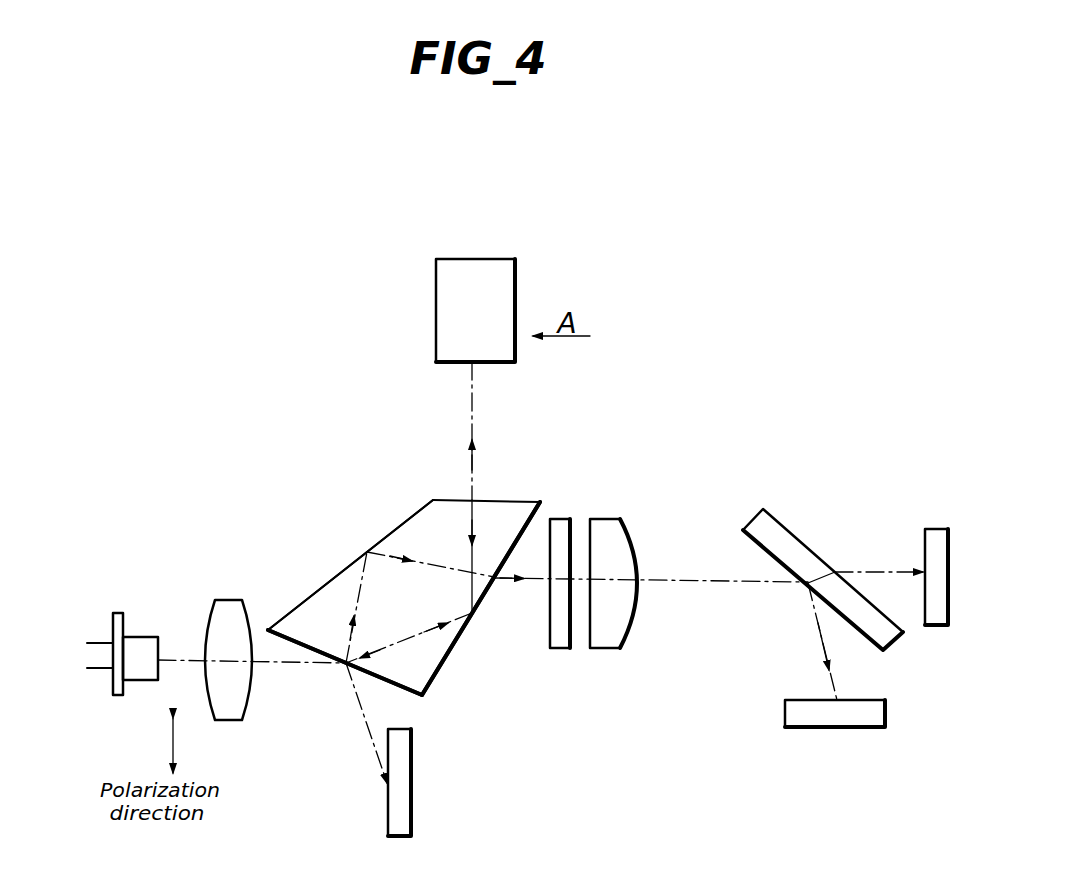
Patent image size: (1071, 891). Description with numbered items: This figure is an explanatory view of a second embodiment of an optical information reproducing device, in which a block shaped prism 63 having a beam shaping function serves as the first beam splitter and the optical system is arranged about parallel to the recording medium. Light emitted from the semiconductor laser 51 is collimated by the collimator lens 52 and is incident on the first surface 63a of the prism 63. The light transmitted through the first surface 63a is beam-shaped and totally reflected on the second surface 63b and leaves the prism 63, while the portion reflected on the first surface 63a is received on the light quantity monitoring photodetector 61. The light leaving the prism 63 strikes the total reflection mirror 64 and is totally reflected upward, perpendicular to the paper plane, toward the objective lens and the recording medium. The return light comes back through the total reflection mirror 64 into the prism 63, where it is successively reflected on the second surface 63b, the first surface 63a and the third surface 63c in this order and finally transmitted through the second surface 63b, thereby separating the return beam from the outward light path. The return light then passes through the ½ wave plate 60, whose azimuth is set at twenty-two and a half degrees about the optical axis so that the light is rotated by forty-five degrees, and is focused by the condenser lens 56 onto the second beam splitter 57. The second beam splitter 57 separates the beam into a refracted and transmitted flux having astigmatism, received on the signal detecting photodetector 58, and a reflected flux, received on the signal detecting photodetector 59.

The semiconductor laser 51 is at (138, 680).
The collimator lens 52 is at (222, 600).
The condenser lens 56 is at (609, 650).
The second beam splitter 57 is at (798, 538).
The signal detecting photodetector 58 is at (938, 529).
The signal detecting photodetector 59 is at (885, 710).
The ½ wave plate 60 is at (558, 650).
The light quantity monitoring photodetector 61 is at (412, 827).
The prism 63 is at (404, 622).
The first surface 63a is at (398, 688).
The second surface 63b is at (460, 632).
The third surface 63c is at (323, 585).
The total reflection mirror 64 is at (517, 277).